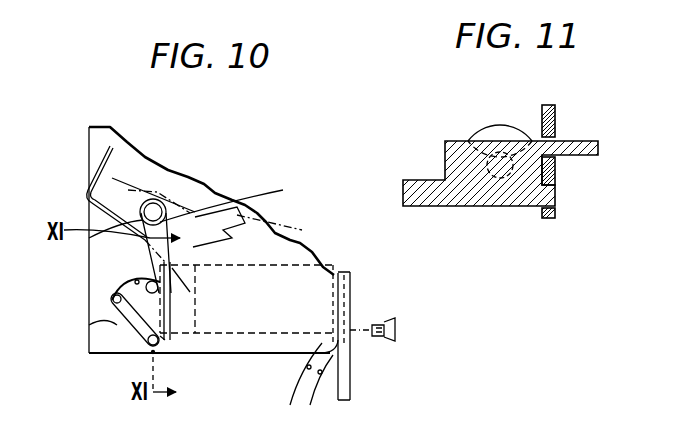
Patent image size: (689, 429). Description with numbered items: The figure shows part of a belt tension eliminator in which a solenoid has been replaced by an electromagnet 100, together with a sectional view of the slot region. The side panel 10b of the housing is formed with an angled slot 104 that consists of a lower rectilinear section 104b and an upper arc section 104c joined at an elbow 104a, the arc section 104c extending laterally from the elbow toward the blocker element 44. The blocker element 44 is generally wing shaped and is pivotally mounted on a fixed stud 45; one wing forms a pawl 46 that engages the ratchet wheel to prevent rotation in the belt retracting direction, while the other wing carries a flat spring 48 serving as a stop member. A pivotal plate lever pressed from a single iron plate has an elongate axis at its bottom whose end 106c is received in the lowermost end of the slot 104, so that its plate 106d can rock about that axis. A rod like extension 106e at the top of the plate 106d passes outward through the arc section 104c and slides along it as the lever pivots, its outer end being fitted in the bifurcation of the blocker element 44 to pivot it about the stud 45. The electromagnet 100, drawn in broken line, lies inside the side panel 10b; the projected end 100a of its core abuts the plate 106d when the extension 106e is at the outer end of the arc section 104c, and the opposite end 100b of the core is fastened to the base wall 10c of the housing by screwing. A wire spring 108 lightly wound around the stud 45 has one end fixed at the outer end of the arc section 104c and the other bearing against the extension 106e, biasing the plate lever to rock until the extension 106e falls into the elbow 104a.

In FIG. 10, the side panel 10b is at (126, 152).
In FIG. 11, the side panel 10b is at (556, 116).
In FIG. 10, the base wall 10c is at (350, 338).
In FIG. 10, the blocker element 44 is at (183, 202).
In FIG. 10, the fixed stud 45 is at (155, 208).
In FIG. 10, the pawl 46 is at (250, 226).
In FIG. 10, the flat spring 48 is at (101, 147).
In FIG. 10, the electromagnet 100 is at (284, 264).
In FIG. 11, the electromagnet 100 is at (502, 122).
In FIG. 10, the projected end of electromagnet core 100a is at (170, 300).
In FIG. 11, the projected end of electromagnet core 100a is at (483, 134).
In FIG. 10, the opposite end of electromagnet core 100b is at (339, 272).
In FIG. 11, the angled slot 104 is at (556, 182).
In FIG. 10, the elbow 104a is at (113, 299).
In FIG. 11, the elbow 104a is at (560, 139).
In FIG. 10, the lower rectilinear section 104b is at (118, 326).
In FIG. 10, the upper arc section 104c is at (136, 281).
In FIG. 10, the opposite end of axis 106c is at (160, 336).
In FIG. 11, the opposite end of axis 106c is at (560, 205).
In FIG. 11, the plate 106d is at (445, 155).
In FIG. 11, the rod like extension 106e is at (598, 147).
In FIG. 10, the wire spring 108 is at (186, 206).